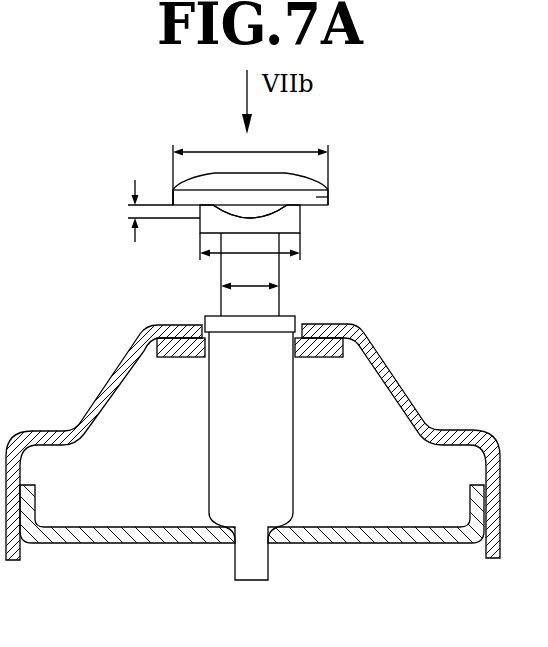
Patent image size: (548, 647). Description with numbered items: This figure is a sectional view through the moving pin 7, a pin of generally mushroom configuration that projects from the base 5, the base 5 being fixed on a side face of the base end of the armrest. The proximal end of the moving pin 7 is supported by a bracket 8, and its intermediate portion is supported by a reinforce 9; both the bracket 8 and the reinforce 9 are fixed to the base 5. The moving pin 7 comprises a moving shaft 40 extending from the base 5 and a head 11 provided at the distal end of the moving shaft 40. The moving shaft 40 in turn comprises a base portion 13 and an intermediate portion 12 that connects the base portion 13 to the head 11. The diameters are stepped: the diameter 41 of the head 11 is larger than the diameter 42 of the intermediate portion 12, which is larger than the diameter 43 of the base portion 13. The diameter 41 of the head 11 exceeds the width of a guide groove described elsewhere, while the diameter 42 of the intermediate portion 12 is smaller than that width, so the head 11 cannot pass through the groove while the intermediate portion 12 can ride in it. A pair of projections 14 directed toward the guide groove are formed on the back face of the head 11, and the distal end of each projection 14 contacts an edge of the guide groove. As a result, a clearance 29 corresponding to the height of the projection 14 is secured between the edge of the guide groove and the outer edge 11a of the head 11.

The base 5 is at (410, 390).
The moving pin 7 is at (184, 173).
The bracket 8 is at (368, 545).
The reinforce 9 is at (160, 366).
The head 11 is at (329, 197).
The outer edge of the head 11a is at (171, 206).
The intermediate portion 12 is at (198, 223).
The base portion 13 is at (220, 271).
The projection 14 is at (280, 208).
The clearance 29 is at (128, 206).
The moving shaft 40 is at (246, 341).
The diameter of the head 41 is at (312, 153).
The diameter of the intermediate portion 42 is at (250, 257).
The diameter of the base portion 43 is at (255, 292).